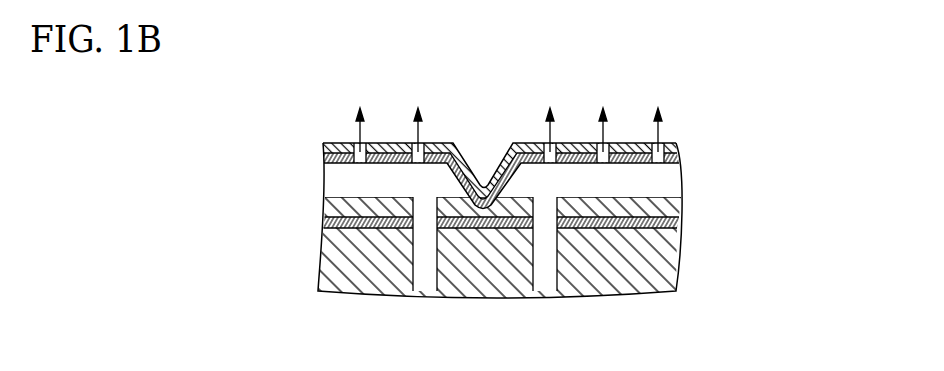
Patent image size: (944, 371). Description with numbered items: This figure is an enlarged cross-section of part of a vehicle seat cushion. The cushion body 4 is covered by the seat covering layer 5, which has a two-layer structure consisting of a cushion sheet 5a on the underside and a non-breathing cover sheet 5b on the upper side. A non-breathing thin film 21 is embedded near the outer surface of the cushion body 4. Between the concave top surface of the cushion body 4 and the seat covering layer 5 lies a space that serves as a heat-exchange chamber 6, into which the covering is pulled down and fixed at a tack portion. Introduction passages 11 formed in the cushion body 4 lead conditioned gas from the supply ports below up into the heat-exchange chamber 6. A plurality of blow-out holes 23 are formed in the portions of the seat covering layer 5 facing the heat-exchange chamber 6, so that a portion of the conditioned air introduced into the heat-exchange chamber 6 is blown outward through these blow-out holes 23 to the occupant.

The cushion body 4 is at (322, 257).
The non-breathing thin film 21 is at (325, 222).
The heat-exchange chamber 6 is at (325, 182).
The seat covering layer 5 is at (445, 163).
The cushion sheet 5a is at (324, 158).
The non-breathing cover sheet 5b is at (323, 147).
The introduction passage 11 is at (427, 270).
The blow-out hole 23 is at (364, 143).